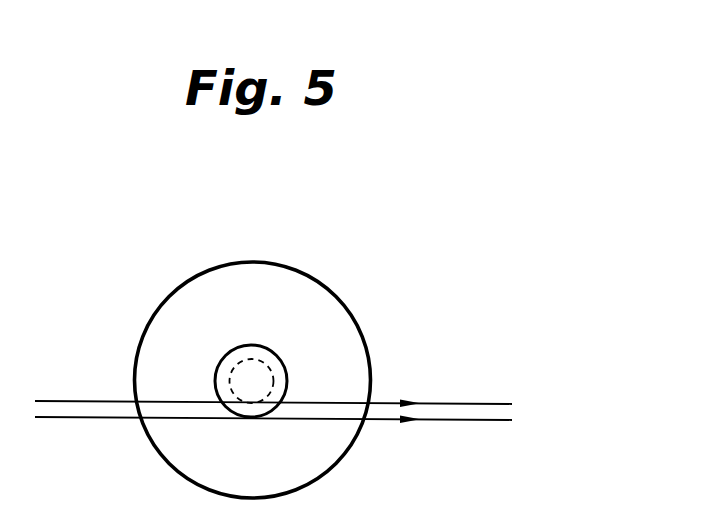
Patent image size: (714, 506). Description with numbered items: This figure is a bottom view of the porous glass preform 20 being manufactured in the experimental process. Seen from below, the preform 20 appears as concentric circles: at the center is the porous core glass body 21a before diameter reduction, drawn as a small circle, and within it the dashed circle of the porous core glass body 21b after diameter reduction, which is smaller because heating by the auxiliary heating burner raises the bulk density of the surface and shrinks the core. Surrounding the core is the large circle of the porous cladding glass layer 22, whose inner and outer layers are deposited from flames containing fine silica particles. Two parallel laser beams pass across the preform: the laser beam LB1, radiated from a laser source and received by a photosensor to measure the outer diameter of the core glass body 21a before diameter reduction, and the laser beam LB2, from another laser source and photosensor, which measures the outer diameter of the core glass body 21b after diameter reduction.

The preform 20 is at (415, 193).
The porous core glass body before diameter reduction 21a is at (280, 360).
The porous core glass body after diameter reduction 21b is at (275, 377).
The porous cladding glass layer 22 is at (306, 289).
The laser beam LB1 is at (492, 421).
The laser beam LB2 is at (500, 404).